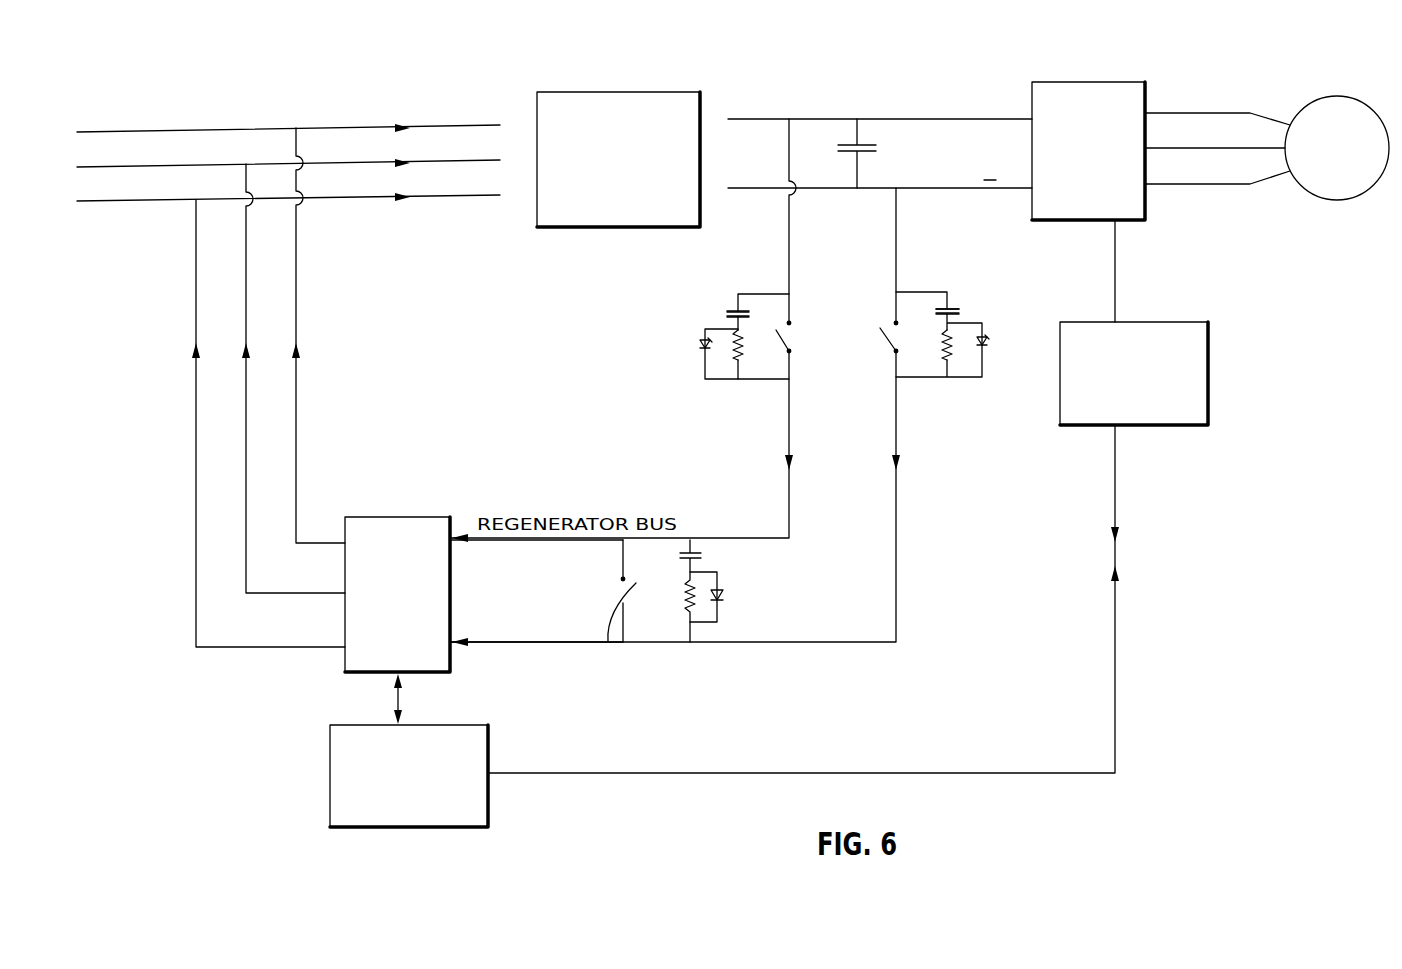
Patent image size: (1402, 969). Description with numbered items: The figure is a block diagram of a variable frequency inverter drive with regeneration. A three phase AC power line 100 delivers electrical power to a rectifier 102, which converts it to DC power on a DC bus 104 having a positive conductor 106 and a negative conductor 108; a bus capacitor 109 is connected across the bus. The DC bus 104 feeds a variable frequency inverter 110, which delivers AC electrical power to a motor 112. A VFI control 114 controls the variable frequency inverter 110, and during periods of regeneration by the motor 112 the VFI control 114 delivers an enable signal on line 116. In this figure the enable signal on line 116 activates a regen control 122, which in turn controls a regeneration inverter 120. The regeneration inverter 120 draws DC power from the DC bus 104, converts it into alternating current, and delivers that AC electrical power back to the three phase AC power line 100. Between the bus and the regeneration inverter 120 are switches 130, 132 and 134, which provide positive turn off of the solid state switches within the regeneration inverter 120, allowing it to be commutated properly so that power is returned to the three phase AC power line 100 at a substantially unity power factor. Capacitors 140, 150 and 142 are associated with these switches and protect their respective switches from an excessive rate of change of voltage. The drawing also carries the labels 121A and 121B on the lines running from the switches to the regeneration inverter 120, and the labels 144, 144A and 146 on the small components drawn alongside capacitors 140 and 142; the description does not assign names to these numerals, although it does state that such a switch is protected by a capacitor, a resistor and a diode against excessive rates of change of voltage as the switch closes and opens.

The three phase AC power line 100 is at (108, 131).
The rectifier 102 is at (616, 92).
The DC bus 104 is at (795, 90).
The positive conductor 106 is at (935, 119).
The negative conductor 108 is at (990, 192).
The bus capacitor 109 is at (862, 140).
The variable frequency inverter 110 is at (1085, 82).
The motor 112 is at (1326, 96).
The VFI control 114 is at (1208, 368).
The enable signal line 116 is at (1115, 488).
The regeneration inverter 120 is at (397, 594).
The regenerator bus positive line 121A is at (492, 541).
The regenerator bus negative line 121B is at (566, 643).
The regen control 122 is at (375, 776).
The switch 130 is at (773, 348).
The switch 132 is at (900, 337).
The switch 134 is at (610, 603).
The capacitor 140 is at (733, 305).
The capacitor 142 is at (950, 305).
The snubber diode 144 is at (698, 344).
The snubber diode 144A is at (985, 348).
The snubber resistor 146 is at (738, 356).
The capacitor 150 is at (700, 551).